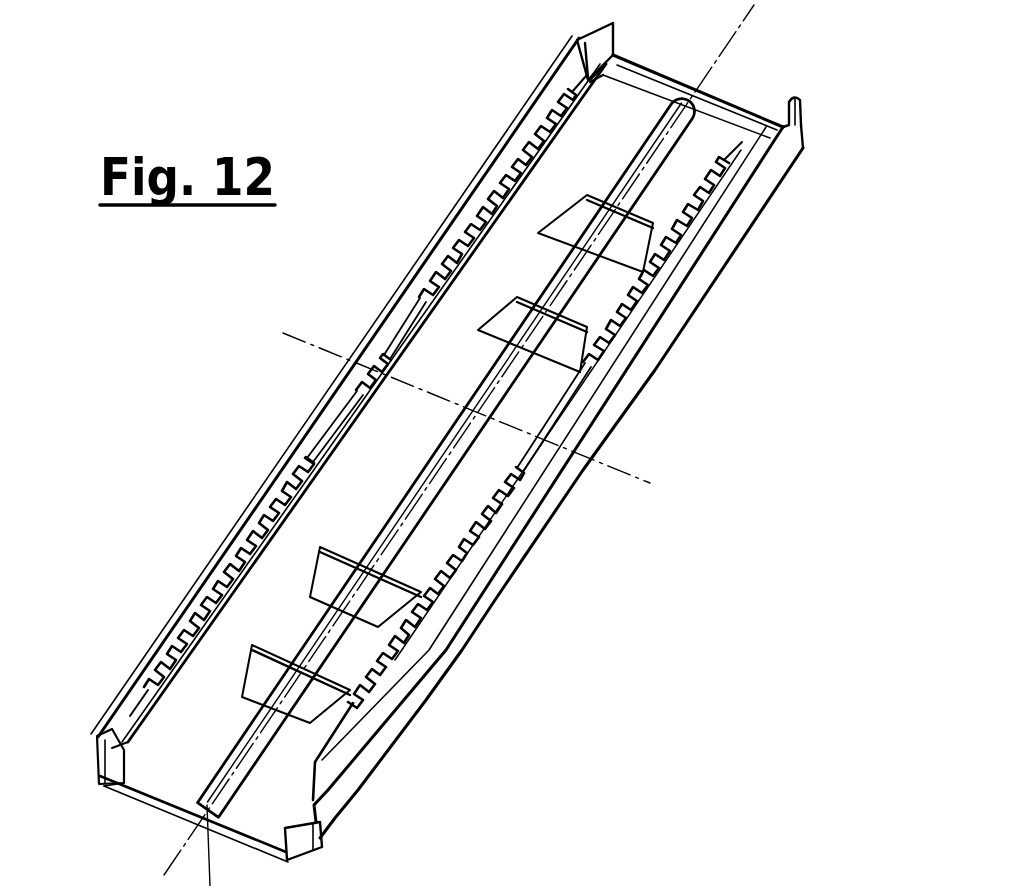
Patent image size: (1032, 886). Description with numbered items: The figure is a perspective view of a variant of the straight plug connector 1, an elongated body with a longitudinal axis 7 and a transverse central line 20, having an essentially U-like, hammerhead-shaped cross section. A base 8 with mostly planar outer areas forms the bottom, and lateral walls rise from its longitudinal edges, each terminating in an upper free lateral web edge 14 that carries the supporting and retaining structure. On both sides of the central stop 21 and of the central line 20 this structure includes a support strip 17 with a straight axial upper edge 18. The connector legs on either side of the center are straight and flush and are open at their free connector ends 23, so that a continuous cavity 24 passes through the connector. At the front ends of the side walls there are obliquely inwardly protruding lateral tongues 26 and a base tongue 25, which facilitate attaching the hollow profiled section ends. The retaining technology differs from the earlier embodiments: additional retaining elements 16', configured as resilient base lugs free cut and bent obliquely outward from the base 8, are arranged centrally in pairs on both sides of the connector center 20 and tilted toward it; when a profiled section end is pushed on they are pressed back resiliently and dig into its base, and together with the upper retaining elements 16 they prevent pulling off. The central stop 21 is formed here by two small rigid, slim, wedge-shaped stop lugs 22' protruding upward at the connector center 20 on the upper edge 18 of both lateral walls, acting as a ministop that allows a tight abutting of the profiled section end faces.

The plug connector 1 is at (428, 193).
The longitudinal axis 7 is at (744, 22).
The base 8 is at (420, 550).
The upper free lateral web edge 14 is at (500, 527).
The upper retaining elements 16 is at (545, 431).
The additional retaining elements 16' is at (444, 459).
The support strip 17 is at (545, 408).
The upper edge 18 is at (380, 700).
The transverse central line 20 is at (283, 334).
The central stop 21 is at (375, 370).
The stop lugs 22' is at (366, 380).
The free connector ends 23 is at (131, 814).
The continuous cavity 24 is at (358, 490).
The base tongue 25 is at (673, 82).
The lateral tongues 26 is at (806, 119).